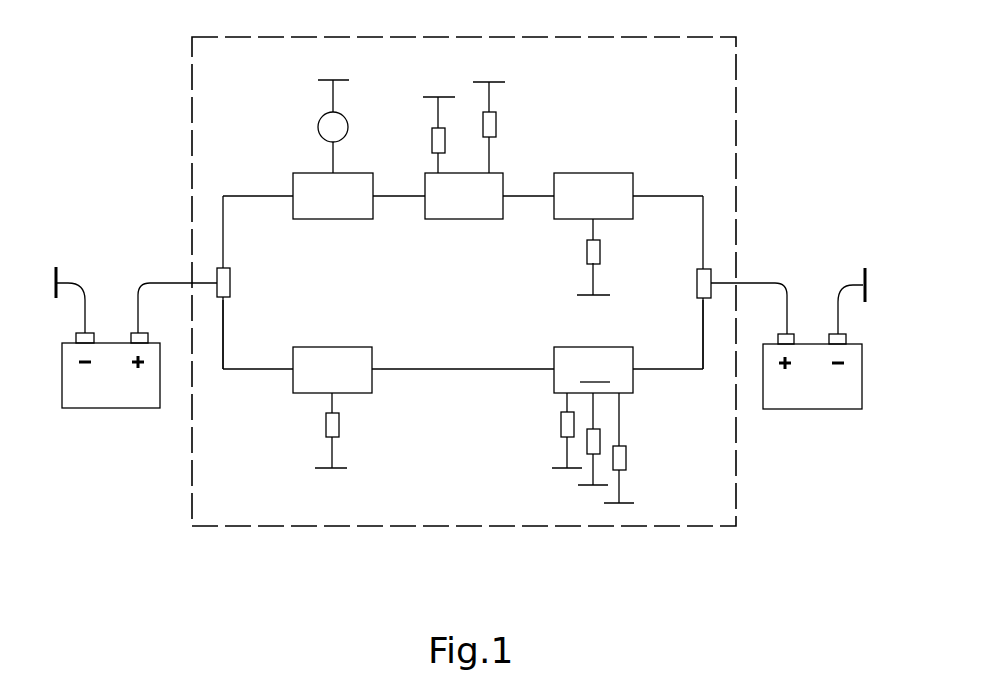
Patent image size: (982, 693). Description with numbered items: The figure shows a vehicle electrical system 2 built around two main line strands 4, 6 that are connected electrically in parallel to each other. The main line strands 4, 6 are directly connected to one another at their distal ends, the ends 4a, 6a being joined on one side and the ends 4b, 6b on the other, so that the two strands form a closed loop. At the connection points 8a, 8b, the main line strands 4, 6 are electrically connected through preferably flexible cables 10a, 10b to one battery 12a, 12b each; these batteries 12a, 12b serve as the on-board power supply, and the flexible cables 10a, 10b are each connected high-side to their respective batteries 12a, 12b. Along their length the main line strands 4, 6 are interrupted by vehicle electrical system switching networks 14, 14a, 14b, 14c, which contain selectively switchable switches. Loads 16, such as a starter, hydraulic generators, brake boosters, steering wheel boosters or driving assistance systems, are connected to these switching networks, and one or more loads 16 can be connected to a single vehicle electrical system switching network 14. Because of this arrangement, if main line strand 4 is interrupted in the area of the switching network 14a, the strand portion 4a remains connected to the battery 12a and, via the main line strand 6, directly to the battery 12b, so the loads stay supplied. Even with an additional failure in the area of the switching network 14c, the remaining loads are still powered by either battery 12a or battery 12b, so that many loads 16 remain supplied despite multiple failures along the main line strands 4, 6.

The vehicle electrical system 2 is at (598, 37).
The main line strand 4 is at (665, 195).
The distal end of main line strand 4a is at (714, 237).
The distal end of main line strand 4b is at (218, 237).
The main line strand 6 is at (665, 372).
The distal end of main line strand 6a is at (715, 353).
The distal end of main line strand 6b is at (210, 358).
The connection point 8a is at (697, 280).
The connection point 8b is at (231, 283).
The flexible cable 10a is at (765, 282).
The flexible cable 10b is at (158, 280).
The battery 12a is at (820, 410).
The battery 12b is at (102, 410).
The vehicle electrical system switching network 14 is at (480, 209).
The vehicle electrical system switching network 14a is at (616, 209).
The vehicle electrical system switching network 14b is at (354, 208).
The vehicle electrical system switching network 14c is at (352, 382).
The load 16 is at (350, 125).